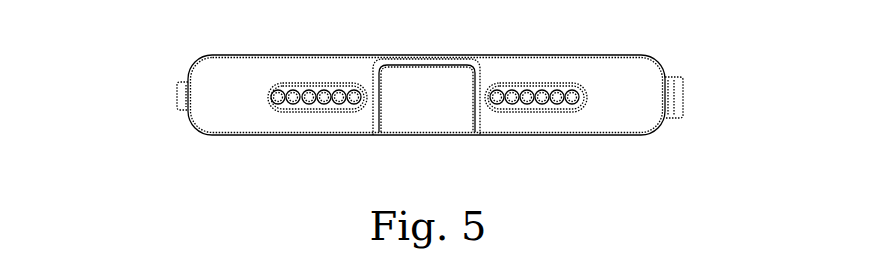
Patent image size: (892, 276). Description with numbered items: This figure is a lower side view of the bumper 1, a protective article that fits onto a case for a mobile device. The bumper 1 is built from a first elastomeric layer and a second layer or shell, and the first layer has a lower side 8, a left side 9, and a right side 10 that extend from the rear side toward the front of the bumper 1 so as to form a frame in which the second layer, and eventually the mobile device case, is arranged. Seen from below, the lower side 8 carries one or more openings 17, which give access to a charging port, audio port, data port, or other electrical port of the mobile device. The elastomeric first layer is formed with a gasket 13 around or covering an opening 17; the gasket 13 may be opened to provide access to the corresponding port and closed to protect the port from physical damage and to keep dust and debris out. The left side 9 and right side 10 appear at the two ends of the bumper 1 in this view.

The bumper 1 is at (570, 155).
The lower side 8 is at (486, 73).
The left side 9 is at (657, 73).
The right side 10 is at (187, 79).
The gasket 13 is at (435, 78).
The opening 17 is at (527, 97).